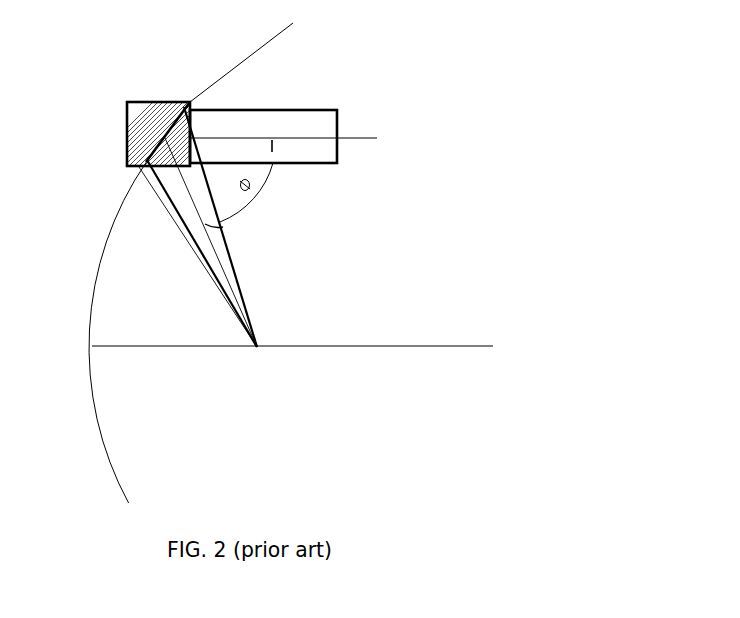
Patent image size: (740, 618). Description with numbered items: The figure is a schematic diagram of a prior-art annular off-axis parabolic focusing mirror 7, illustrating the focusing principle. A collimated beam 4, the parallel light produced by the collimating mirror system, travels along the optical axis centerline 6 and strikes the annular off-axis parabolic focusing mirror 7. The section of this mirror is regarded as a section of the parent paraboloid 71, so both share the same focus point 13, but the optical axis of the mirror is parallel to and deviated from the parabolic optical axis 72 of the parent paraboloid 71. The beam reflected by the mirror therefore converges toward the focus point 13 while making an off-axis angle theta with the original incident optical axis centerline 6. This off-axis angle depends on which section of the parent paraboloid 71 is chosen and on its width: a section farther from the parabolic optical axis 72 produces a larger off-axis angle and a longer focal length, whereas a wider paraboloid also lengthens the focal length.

The annular off-axis parabolic focusing mirror 7 is at (115, 140).
The collimated beam 4 is at (250, 110).
The optical axis centerline 6 is at (316, 103).
The focus point 13 is at (256, 228).
The parent paraboloid 71 is at (158, 332).
The parabolic optical axis 72 is at (292, 376).